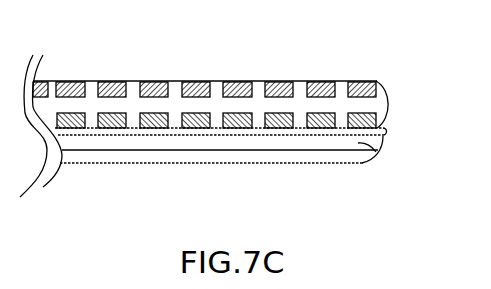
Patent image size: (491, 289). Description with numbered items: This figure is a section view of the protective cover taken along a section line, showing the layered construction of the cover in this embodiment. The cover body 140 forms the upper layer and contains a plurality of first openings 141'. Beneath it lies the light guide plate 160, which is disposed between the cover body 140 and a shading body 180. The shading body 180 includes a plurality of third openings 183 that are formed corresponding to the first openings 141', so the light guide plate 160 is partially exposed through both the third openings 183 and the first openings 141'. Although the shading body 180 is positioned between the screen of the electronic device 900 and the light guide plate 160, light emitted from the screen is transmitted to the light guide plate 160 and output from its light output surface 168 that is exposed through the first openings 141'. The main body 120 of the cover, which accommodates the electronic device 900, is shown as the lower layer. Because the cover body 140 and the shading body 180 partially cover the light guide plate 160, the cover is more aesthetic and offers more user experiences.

The main body 120 is at (322, 163).
The cover body 140 is at (318, 82).
The first openings 141' is at (281, 59).
The light guide plate 160 is at (378, 87).
The light output surface 168 is at (385, 104).
The shading body 180 is at (280, 128).
The third openings 183 is at (133, 128).
The electronic device 900 is at (372, 148).